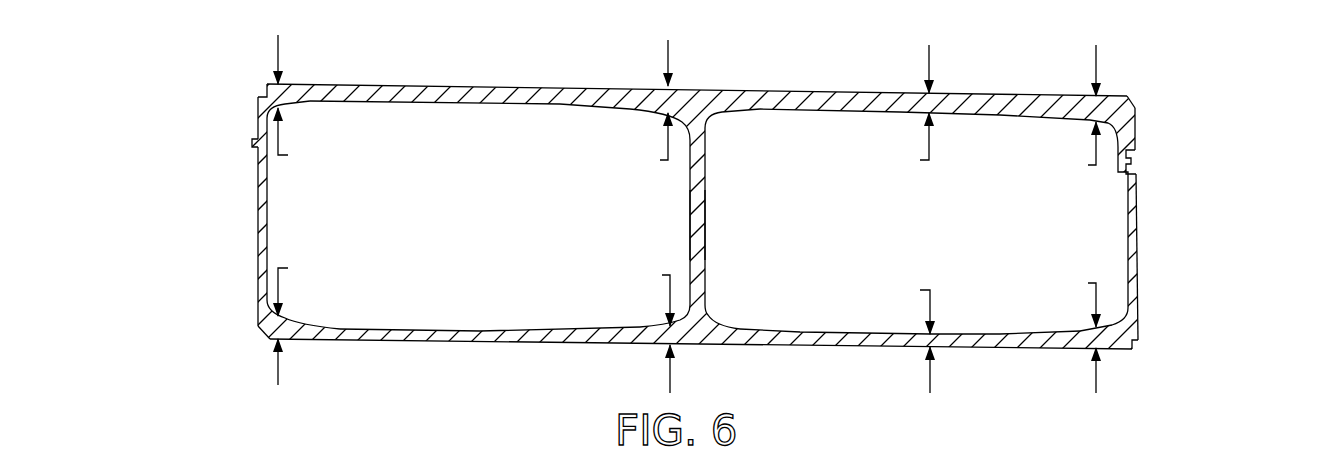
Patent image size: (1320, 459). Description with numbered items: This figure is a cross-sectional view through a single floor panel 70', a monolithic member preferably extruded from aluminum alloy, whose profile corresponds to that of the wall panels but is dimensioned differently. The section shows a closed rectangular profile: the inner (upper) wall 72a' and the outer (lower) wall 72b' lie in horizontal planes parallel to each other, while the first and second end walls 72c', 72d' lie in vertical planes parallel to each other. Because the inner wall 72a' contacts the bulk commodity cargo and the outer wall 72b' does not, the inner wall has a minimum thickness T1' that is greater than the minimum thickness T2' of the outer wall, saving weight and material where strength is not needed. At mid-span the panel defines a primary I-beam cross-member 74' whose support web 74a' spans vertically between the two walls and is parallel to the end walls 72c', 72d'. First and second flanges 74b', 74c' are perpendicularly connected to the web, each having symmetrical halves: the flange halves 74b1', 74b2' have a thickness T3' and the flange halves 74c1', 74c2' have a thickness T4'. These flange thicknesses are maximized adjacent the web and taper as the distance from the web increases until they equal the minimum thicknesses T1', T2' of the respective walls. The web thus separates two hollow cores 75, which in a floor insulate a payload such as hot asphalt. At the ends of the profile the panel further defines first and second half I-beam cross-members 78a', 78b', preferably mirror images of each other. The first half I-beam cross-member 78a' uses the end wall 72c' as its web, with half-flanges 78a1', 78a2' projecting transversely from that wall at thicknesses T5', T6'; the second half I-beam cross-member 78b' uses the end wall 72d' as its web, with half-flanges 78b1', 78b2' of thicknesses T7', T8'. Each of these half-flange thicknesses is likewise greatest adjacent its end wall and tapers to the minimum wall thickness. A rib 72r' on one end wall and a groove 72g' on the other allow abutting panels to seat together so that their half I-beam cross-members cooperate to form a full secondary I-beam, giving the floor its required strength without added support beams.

The floor panel 70' is at (660, 214).
The inner (upper) wall 72a' is at (660, 200).
The outer (lower) wall 72b' is at (660, 228).
The first end wall 72c' is at (660, 215).
The second end wall 72d' is at (660, 215).
The rib 72r' is at (213, 132).
The groove 72g' is at (1179, 155).
The primary I-beam cross-member 74' is at (660, 200).
The support web 74a' is at (733, 225).
The first flange 74b' is at (660, 215).
The first half of first flange 74b1' is at (618, 129).
The second half of first flange 74b2' is at (782, 129).
The second flange 74c' is at (660, 215).
The first half of second flange 74c1' is at (618, 303).
The second half of second flange 74c2' is at (746, 306).
The hollow core 75 is at (443, 294).
The first half I-beam cross-member 78a' is at (660, 200).
The first half-flange of first half I-beam 78a1' is at (344, 123).
The second half-flange of first half I-beam 78a2' is at (660, 215).
The second half I-beam cross-member 78b' is at (660, 205).
The first half-flange of second half I-beam 78b1' is at (1049, 133).
The second half-flange of second half I-beam 78b2' is at (660, 215).
The minimum thickness of inner wall T1' is at (911, 111).
The minimum thickness of outer wall T2' is at (912, 333).
The thickness of first flange halves T3' is at (650, 109).
The thickness of second flange halves T4' is at (651, 328).
The thickness of first half-flange T5' is at (301, 104).
The thickness of second half-flange T6' is at (301, 319).
The thickness of first half-flange of second half I-beam T7' is at (1077, 116).
The thickness of second half-flange of second half I-beam T8' is at (1076, 331).